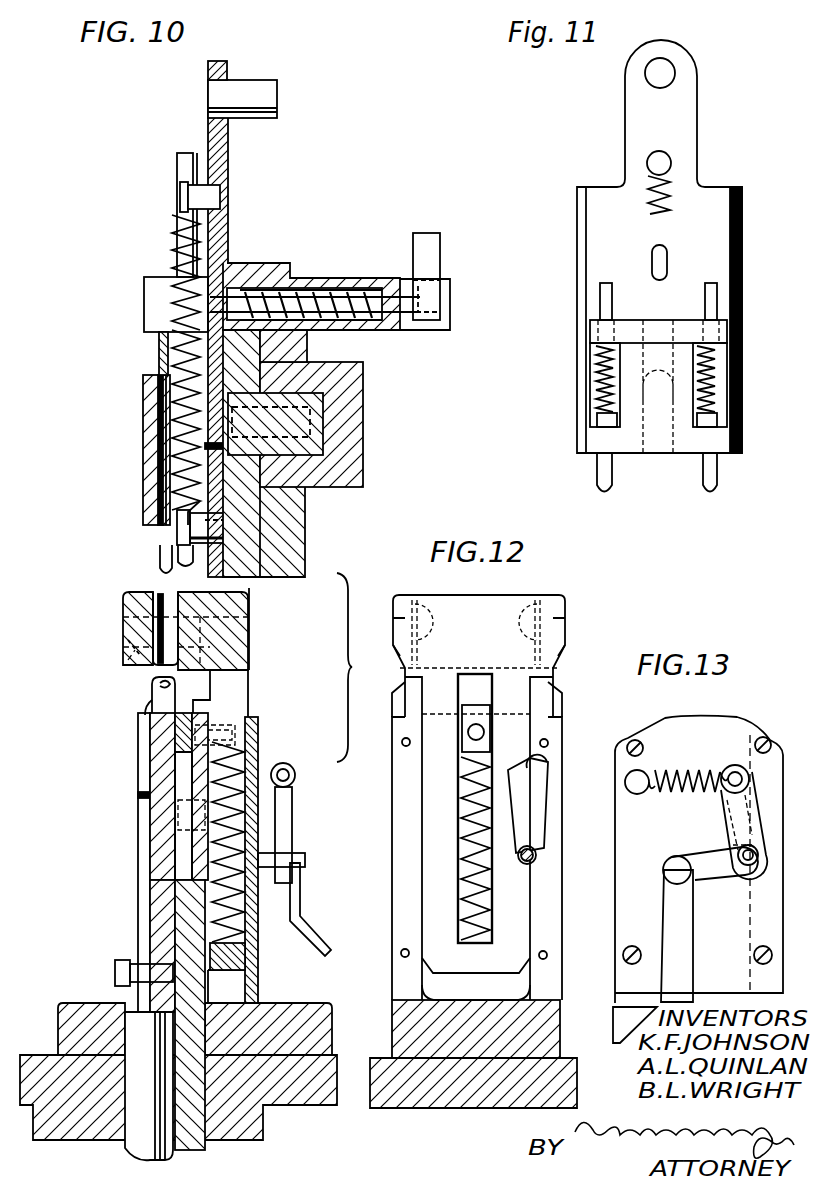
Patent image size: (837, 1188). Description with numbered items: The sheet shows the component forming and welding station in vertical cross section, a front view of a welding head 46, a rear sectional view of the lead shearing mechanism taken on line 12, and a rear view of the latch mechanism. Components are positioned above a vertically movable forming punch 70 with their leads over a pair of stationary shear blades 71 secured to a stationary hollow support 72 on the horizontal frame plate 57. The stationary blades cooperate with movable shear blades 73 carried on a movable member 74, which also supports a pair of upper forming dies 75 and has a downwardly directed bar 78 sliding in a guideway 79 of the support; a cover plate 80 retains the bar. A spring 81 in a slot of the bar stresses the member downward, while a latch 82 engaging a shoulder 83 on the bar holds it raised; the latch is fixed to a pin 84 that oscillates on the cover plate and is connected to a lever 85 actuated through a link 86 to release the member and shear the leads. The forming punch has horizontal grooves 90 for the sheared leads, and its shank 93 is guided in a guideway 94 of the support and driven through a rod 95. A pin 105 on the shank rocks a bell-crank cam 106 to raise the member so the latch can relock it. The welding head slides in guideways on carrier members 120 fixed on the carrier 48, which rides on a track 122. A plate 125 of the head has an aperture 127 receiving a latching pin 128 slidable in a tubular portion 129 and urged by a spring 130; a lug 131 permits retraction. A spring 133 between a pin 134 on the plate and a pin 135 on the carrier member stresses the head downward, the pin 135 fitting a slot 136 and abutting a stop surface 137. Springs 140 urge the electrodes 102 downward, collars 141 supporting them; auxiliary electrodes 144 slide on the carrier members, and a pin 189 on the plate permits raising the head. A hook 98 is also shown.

In FIG. 10, the section line 12 is at (263, 601).
In FIG. 10, the welding head 46 is at (218, 140).
In FIG. 11, the welding head 46 is at (664, 465).
In FIG. 10, the carrier 48 is at (312, 438).
In FIG. 10, the horizontal frame plate 57 is at (315, 1107).
In FIG. 12, the horizontal frame plate 57 is at (438, 1105).
In FIG. 10, the forming punch 70 is at (168, 735).
In FIG. 10, the stationary shear blades 71 is at (150, 688).
In FIG. 12, the stationary shear blades 71 is at (394, 700).
In FIG. 10, the stationary hollow support 72 is at (150, 870).
In FIG. 12, the stationary hollow support 72 is at (400, 745).
In FIG. 10, the movable shear blades 73 is at (125, 660).
In FIG. 12, the movable shear blades 73 is at (393, 648).
In FIG. 10, the movable member 74 is at (135, 605).
In FIG. 12, the movable member 74 is at (492, 608).
In FIG. 12, the upper forming dies 75 is at (432, 612).
In FIG. 10, the bar 78 is at (245, 695).
In FIG. 12, the bar 78 is at (440, 787).
In FIG. 12, the guideway 79 is at (420, 838).
In FIG. 10, the cover plate 80 is at (248, 750).
In FIG. 13, the cover plate 80 is at (712, 740).
In FIG. 10, the spring 81 is at (248, 895).
In FIG. 12, the spring 81 is at (460, 885).
In FIG. 12, the latch 82 is at (548, 805).
In FIG. 13, the latch 82 is at (740, 822).
In FIG. 12, the shoulder 83 is at (518, 768).
In FIG. 12, the pin 84 is at (536, 858).
In FIG. 13, the pin 84 is at (762, 862).
In FIG. 10, the lever 85 is at (290, 833).
In FIG. 13, the lever 85 is at (718, 875).
In FIG. 10, the link 86 is at (300, 912).
In FIG. 13, the link 86 is at (678, 935).
In FIG. 10, the horizontal grooves 90 is at (150, 705).
In FIG. 10, the shank 93 is at (161, 893).
In FIG. 10, the guideway 94 is at (176, 920).
In FIG. 10, the rod 95 is at (140, 1035).
In FIG. 10, the hook 98 is at (158, 684).
In FIG. 10, the electrodes 102 is at (165, 553).
In FIG. 11, the electrodes 102 is at (600, 475).
In FIG. 10, the pin 105 is at (185, 828).
In FIG. 10, the cam 106 is at (183, 737).
In FIG. 10, the carrier members 120 is at (262, 560).
In FIG. 10, the track 122 is at (342, 385).
In FIG. 10, the plate 125 is at (217, 238).
In FIG. 11, the plate 125 is at (618, 240).
In FIG. 10, the aperture 127 is at (165, 340).
In FIG. 11, the aperture 127 is at (667, 262).
In FIG. 10, the latching pin 128 is at (200, 303).
In FIG. 10, the tubular portion 129 is at (362, 256).
In FIG. 10, the spring 130 is at (340, 330).
In FIG. 10, the lug 131 is at (425, 258).
In FIG. 10, the spring 133 is at (178, 250).
In FIG. 11, the spring 133 is at (668, 196).
In FIG. 10, the pin 134 is at (185, 197).
In FIG. 11, the pin 134 is at (647, 163).
In FIG. 10, the pin 135 is at (200, 530).
In FIG. 10, the slot 136 is at (196, 482).
In FIG. 11, the slot 136 is at (645, 430).
In FIG. 10, the stop surface 137 is at (215, 457).
In FIG. 11, the stop surface 137 is at (598, 362).
In FIG. 11, the springs 140 is at (600, 378).
In FIG. 11, the collars 141 is at (603, 420).
In FIG. 10, the auxiliary electrodes 144 is at (182, 165).
In FIG. 10, the pin 189 is at (248, 88).